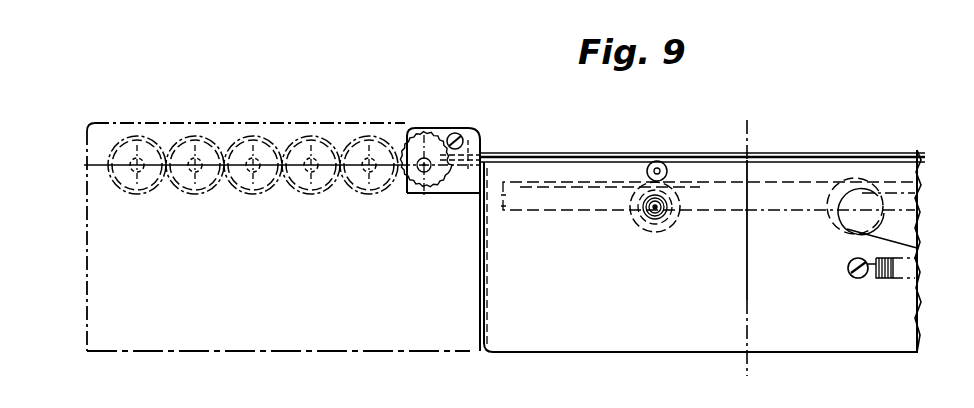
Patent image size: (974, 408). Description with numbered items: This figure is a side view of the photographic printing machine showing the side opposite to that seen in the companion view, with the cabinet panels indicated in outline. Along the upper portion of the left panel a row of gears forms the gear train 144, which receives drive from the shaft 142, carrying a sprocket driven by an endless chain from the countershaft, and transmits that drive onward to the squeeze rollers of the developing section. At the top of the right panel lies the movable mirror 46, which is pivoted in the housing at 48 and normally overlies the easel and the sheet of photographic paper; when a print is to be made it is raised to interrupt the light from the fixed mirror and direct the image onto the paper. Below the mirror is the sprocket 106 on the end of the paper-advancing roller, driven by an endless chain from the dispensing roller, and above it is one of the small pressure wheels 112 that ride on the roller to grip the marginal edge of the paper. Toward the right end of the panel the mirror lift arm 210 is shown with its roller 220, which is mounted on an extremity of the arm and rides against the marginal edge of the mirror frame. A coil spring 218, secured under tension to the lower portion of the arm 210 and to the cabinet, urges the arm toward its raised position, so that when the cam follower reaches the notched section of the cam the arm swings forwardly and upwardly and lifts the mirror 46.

The gear train 144 is at (233, 199).
The shaft 142 is at (424, 175).
The pivot 48 is at (476, 137).
The movable mirror 46 is at (550, 153).
The pressure wheel 112 is at (660, 162).
The sprocket 106 is at (642, 223).
The roller 220 is at (834, 231).
The mirror lift arm 210 is at (894, 244).
The coil spring 218 is at (895, 280).